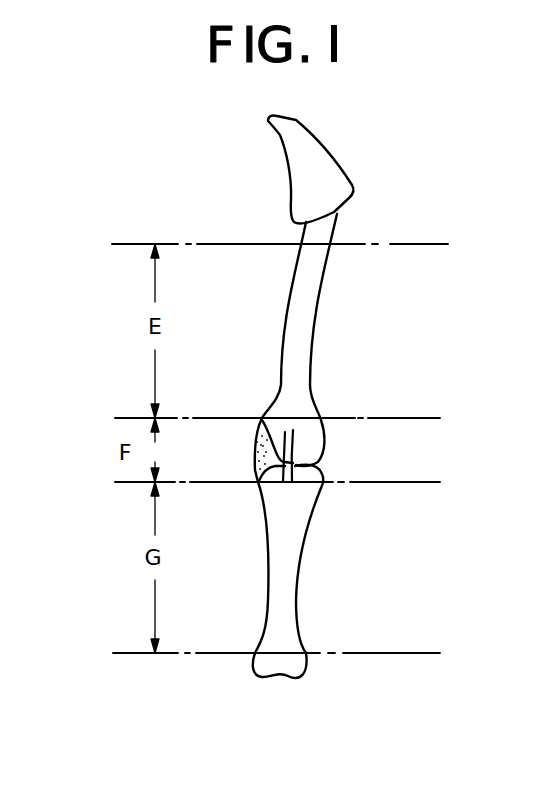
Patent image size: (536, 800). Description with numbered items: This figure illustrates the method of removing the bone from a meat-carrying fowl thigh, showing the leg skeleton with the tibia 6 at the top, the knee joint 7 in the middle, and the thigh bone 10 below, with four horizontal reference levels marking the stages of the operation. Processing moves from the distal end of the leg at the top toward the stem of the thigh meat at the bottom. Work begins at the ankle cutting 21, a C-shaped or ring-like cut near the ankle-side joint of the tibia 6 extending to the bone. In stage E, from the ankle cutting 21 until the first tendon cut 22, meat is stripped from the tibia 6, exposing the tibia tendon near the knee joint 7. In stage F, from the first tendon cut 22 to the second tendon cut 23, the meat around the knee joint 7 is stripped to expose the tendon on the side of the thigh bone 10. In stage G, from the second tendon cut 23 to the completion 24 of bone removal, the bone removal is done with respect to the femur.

The tibia 6 is at (311, 334).
The knee joint 7 is at (319, 455).
The thigh bone 10 is at (297, 588).
The ankle cutting 21 is at (260, 244).
The first tendon cut 22 is at (253, 418).
The second tendon cut 23 is at (253, 482).
The completion of bone removal 24 is at (253, 653).